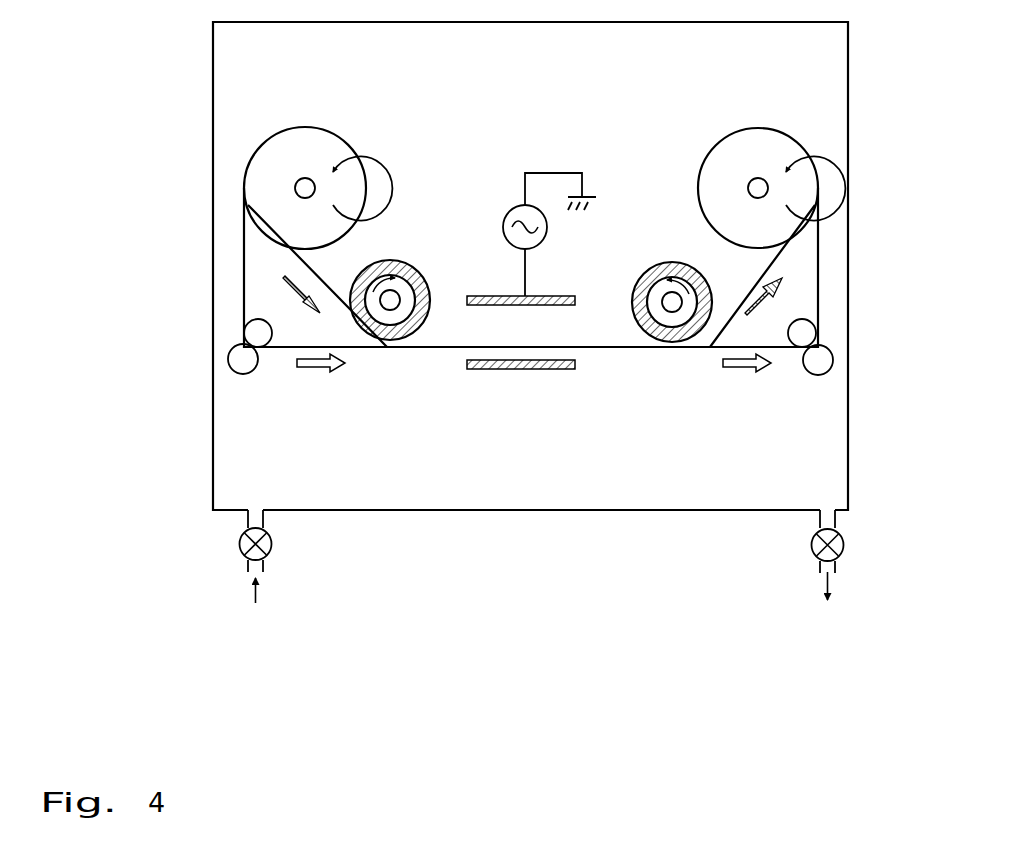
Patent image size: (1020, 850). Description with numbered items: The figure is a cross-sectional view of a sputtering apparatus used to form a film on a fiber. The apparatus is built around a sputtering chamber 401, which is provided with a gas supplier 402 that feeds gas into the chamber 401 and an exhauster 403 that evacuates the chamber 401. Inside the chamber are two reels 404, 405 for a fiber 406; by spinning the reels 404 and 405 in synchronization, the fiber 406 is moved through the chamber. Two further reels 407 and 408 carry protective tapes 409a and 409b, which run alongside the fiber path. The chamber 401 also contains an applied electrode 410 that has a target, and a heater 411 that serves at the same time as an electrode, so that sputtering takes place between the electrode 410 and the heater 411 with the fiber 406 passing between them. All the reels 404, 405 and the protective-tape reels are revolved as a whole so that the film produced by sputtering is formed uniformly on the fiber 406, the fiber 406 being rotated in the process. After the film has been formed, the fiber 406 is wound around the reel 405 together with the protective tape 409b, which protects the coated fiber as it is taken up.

The sputtering chamber 401 is at (212, 218).
The gas supplier 402 is at (238, 547).
The exhauster 403 is at (812, 551).
The reel 404 is at (285, 145).
The reel 405 is at (752, 147).
The fiber 406 is at (244, 262).
The reel 407 is at (383, 345).
The reel 408 is at (668, 343).
The protective tape 409a is at (312, 272).
The protective tape 409b is at (750, 278).
The applied electrode 410 is at (565, 296).
The heater 411 is at (548, 370).